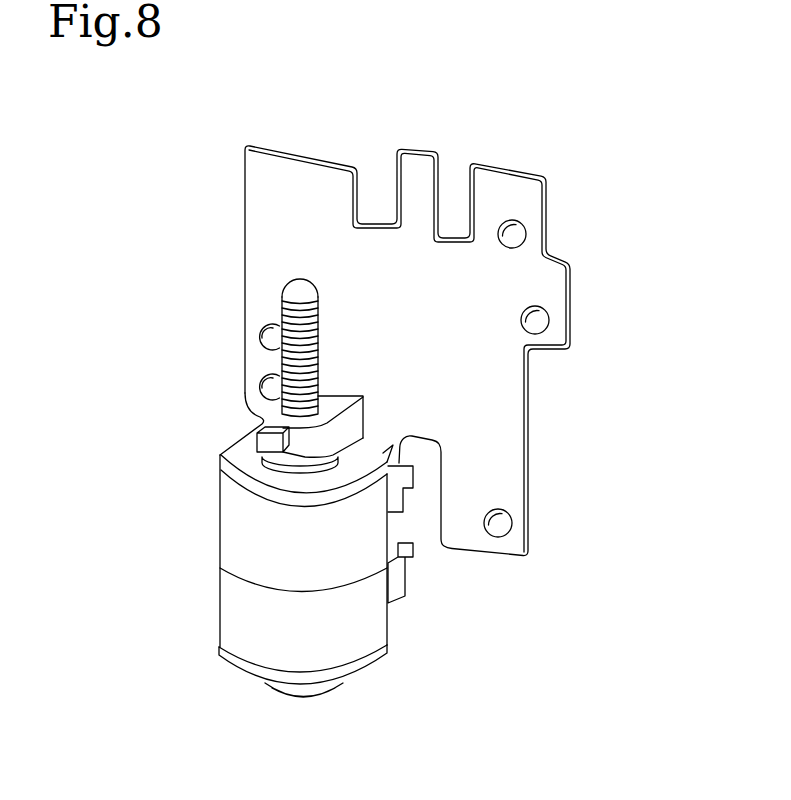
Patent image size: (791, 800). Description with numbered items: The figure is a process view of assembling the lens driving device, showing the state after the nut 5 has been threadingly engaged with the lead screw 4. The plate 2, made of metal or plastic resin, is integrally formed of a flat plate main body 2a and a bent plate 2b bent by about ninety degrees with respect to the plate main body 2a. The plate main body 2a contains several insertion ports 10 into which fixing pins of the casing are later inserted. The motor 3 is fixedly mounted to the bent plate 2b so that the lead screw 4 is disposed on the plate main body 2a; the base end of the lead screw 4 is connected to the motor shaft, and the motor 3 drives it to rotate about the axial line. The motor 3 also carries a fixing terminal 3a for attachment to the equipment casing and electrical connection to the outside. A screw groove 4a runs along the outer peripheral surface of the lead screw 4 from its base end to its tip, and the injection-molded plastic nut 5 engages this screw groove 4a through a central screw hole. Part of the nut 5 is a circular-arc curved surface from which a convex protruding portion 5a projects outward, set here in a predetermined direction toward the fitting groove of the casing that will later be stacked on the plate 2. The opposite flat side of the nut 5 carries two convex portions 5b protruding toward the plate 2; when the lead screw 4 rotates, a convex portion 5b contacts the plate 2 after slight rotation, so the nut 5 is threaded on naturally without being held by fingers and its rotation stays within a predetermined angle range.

The plate 2 is at (316, 302).
The plate main body 2a is at (263, 172).
The bent plate 2b is at (243, 472).
The motor 3 is at (306, 577).
The fixing terminal 3a is at (402, 583).
The lead screw 4 is at (373, 336).
The screw groove 4a is at (317, 328).
The nut 5 is at (275, 418).
The protruding portion 5a is at (257, 449).
The convex portions 5b is at (363, 397).
The insertion ports 10 is at (527, 233).